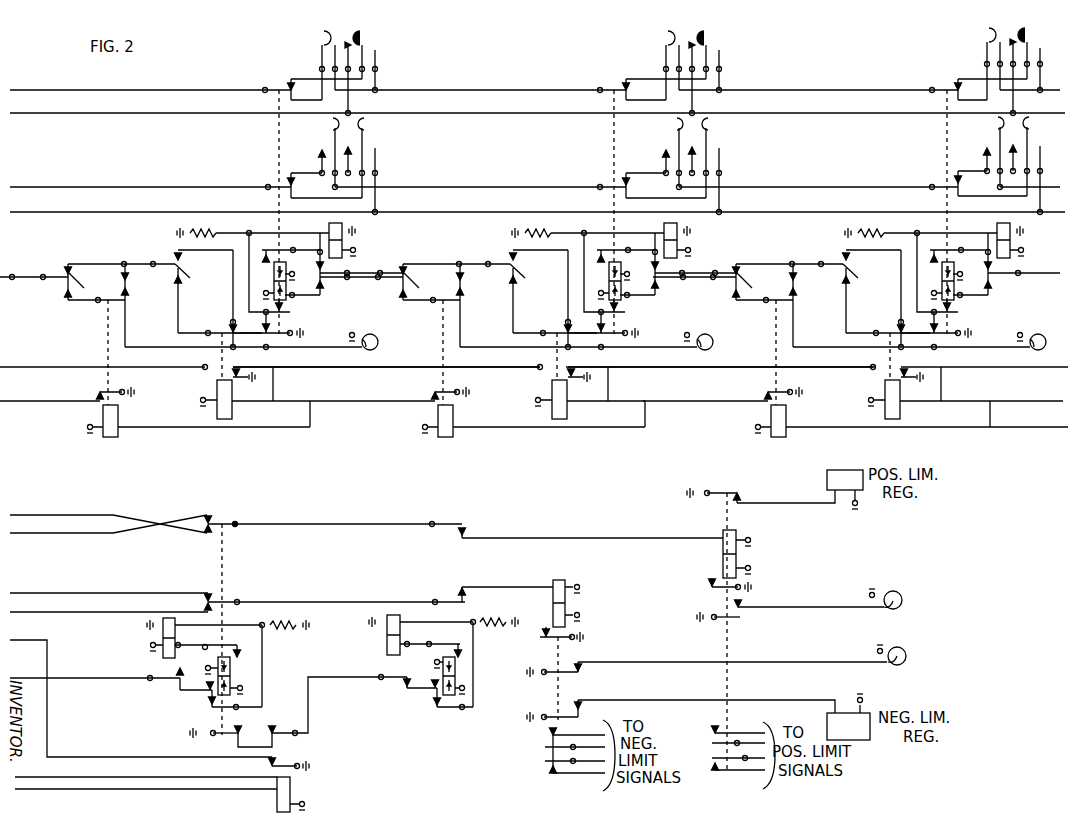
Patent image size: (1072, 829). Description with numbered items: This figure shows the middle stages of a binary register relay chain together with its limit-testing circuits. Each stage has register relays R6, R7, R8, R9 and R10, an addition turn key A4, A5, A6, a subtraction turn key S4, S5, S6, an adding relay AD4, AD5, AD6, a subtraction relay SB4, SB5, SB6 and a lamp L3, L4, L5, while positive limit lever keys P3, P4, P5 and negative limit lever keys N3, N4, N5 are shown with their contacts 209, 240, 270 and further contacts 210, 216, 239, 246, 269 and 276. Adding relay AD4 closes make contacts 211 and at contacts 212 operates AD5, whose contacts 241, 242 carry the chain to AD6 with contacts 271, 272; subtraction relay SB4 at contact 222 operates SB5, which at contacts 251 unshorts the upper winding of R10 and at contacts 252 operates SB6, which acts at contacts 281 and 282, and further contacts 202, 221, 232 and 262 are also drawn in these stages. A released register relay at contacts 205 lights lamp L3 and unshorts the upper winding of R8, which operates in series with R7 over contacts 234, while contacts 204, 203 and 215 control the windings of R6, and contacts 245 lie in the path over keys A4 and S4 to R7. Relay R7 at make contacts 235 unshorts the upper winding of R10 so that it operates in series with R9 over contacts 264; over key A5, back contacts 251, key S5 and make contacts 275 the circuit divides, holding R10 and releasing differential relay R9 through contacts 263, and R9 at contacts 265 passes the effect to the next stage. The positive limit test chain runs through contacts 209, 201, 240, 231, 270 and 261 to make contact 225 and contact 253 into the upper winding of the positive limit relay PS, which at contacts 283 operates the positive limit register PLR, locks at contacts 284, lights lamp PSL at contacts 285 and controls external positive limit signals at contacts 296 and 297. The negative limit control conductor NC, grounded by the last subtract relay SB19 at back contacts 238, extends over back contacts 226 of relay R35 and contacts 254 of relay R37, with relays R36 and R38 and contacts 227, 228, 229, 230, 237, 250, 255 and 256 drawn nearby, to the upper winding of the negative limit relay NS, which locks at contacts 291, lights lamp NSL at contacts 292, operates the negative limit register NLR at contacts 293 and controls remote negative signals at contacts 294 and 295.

The contact 201 is at (947, 84).
The contact 202 is at (947, 180).
The contact 203 is at (956, 265).
The contact 204 is at (961, 274).
The contact 205 is at (955, 325).
The relay coil 209 is at (1023, 49).
The relay coil 210 is at (985, 36).
The contact 211 is at (882, 321).
The contact 212 is at (817, 366).
The line 215 is at (1024, 284).
The relay coil 216 is at (1040, 146).
The contact 221 is at (782, 289).
The contact 222 is at (722, 388).
The contact 225 is at (214, 522).
The contact 226 is at (218, 598).
The contact 227 is at (253, 650).
The contact 228 is at (208, 705).
The contact 229 is at (213, 732).
The contact 230 is at (170, 683).
The contact 231 is at (624, 84).
The contact 232 is at (617, 182).
The contact 234 is at (628, 274).
The contact 235 is at (618, 325).
The contact 237 is at (296, 732).
The contact 238 is at (288, 756).
The relay coil 239 is at (710, 47).
The relay coil 240 is at (664, 38).
The contact 241 is at (549, 322).
The contact 242 is at (554, 364).
The line 245 is at (696, 284).
The relay coil 246 is at (719, 150).
The contact 250 is at (405, 682).
The contact 251 is at (447, 291).
The contact 252 is at (402, 403).
The contact 253 is at (621, 247).
The contact 254 is at (451, 596).
The contact 255 is at (463, 656).
The contact 256 is at (436, 705).
The contact 261 is at (289, 84).
The contact 262 is at (289, 182).
The contact 263 is at (286, 247).
The contact 264 is at (293, 307).
The contact 265 is at (283, 325).
The relay coil 269 is at (375, 47).
The relay coil 270 is at (320, 38).
The contact 271 is at (225, 330).
The contact 272 is at (270, 364).
The line 275 is at (327, 278).
The relay coil 276 is at (375, 150).
The contact 281 is at (102, 307).
The contact 282 is at (96, 396).
The contact 283 is at (742, 494).
The contact 284 is at (710, 582).
The contact 285 is at (741, 614).
The contact 291 is at (573, 634).
The contact 292 is at (582, 670).
The contact 293 is at (558, 706).
The contact 294 is at (545, 742).
The contact 295 is at (545, 768).
The contact 296 is at (708, 732).
The contact 297 is at (712, 775).
The selector switch S6 is at (42, 277).
The selector switch S5 is at (369, 275).
The selector switch S4 is at (702, 275).
The switch A6 is at (173, 258).
The switch A5 is at (544, 294).
The switch A4 is at (873, 294).
The relay SB6 is at (198, 420).
The relay SB5 is at (533, 424).
The relay SB4 is at (911, 420).
The relay AD6 is at (255, 397).
The relay AD5 is at (590, 397).
The relay AD4 is at (965, 397).
The relay R10 is at (358, 240).
The relay R9 is at (293, 276).
The relay R8 is at (688, 240).
The relay R7 is at (628, 276).
The relay R6 is at (1022, 240).
The lamp L5 is at (363, 332).
The lamp L4 is at (698, 332).
The lamp L3 is at (1031, 332).
The relay P5 is at (344, 65).
The relay P4 is at (685, 65).
The relay P3 is at (1000, 64).
The relay N5 is at (367, 165).
The relay N4 is at (711, 165).
The relay N3 is at (1013, 165).
The line NC is at (85, 618).
The relay R36 is at (155, 644).
The relay R35 is at (237, 669).
The relay R38 is at (382, 640).
The relay R37 is at (455, 674).
The relay SB19 is at (290, 788).
The relay NS is at (583, 603).
The relay PS is at (736, 528).
The positive limit register PLR is at (863, 470).
The negative limit register NLR is at (848, 717).
The lamp PSL is at (837, 600).
The lamp NSL is at (761, 655).